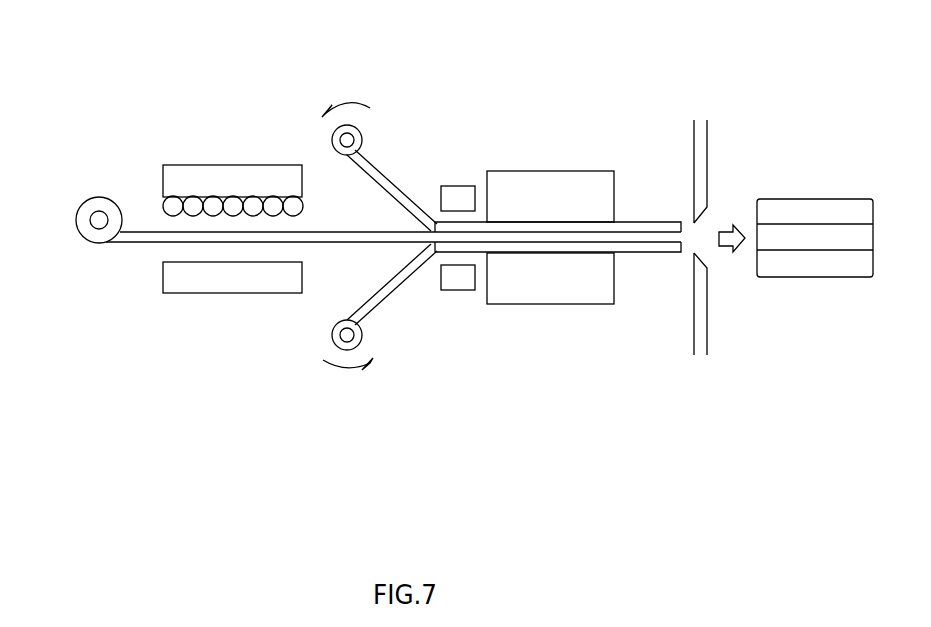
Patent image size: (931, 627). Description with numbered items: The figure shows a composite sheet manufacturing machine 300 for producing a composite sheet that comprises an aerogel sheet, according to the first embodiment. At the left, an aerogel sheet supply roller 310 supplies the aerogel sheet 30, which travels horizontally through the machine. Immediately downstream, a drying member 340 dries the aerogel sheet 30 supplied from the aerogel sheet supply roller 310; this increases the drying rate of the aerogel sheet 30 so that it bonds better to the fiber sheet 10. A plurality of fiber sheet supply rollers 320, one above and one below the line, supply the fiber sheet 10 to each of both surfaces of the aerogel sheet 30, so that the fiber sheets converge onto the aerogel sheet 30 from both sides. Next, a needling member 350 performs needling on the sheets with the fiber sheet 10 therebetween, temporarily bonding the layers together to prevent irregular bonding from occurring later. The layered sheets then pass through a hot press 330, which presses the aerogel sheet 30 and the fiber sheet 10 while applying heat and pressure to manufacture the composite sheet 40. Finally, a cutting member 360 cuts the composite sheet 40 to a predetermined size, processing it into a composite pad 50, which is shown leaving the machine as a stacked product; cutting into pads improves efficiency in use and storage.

The composite sheet manufacturing machine 300 is at (760, 87).
The aerogel sheet supply roller 310 is at (100, 219).
The aerogel sheet 30 is at (99, 197).
The drying member 340 is at (233, 165).
The fiber sheet 10 is at (333, 140).
The fiber sheet supply rollers 320 is at (359, 137).
The needling member 350 is at (458, 186).
The hot press 330 is at (550, 305).
The composite sheet 40 is at (652, 222).
The cutting member 360 is at (708, 145).
The composite pad 50 is at (815, 199).